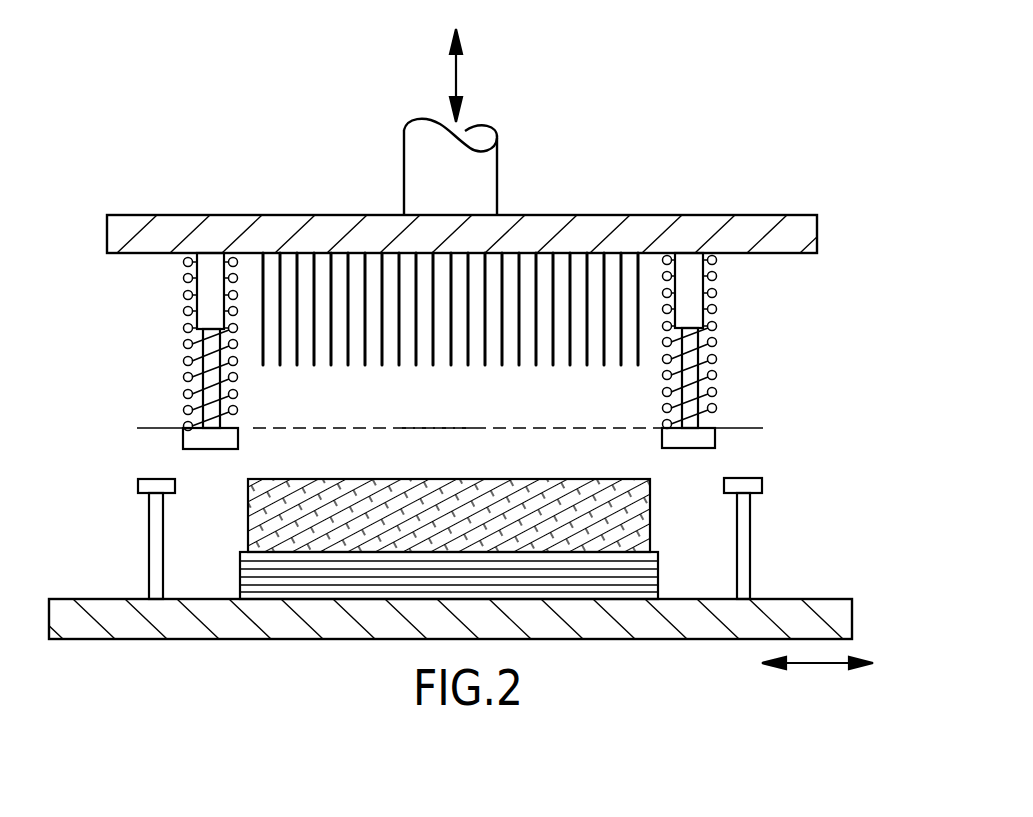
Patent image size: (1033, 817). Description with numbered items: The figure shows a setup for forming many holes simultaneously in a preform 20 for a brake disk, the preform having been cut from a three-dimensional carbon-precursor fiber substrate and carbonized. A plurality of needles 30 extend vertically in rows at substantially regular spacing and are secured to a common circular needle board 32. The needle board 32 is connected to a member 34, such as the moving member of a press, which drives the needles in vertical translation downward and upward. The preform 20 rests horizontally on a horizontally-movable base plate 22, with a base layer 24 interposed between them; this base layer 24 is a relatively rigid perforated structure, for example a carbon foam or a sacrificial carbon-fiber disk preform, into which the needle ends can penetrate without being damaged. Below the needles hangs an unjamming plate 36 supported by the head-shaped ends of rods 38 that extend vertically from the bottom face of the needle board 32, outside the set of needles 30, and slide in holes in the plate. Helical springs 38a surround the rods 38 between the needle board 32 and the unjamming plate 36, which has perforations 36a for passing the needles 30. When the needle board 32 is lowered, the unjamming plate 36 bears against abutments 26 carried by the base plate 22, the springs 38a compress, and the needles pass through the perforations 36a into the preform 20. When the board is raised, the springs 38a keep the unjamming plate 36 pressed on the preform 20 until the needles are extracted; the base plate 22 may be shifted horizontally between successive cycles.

The preform 20 is at (652, 506).
The base plate 22 is at (845, 616).
The base layer 24 is at (648, 567).
The abutments 26 is at (140, 486).
The needles 30 is at (594, 371).
The needle board 32 is at (183, 231).
The member 34 is at (416, 163).
The unjamming plate 36 is at (527, 430).
The perforations 36a is at (458, 456).
The rods 38 is at (205, 440).
The helical springs 38a is at (186, 324).